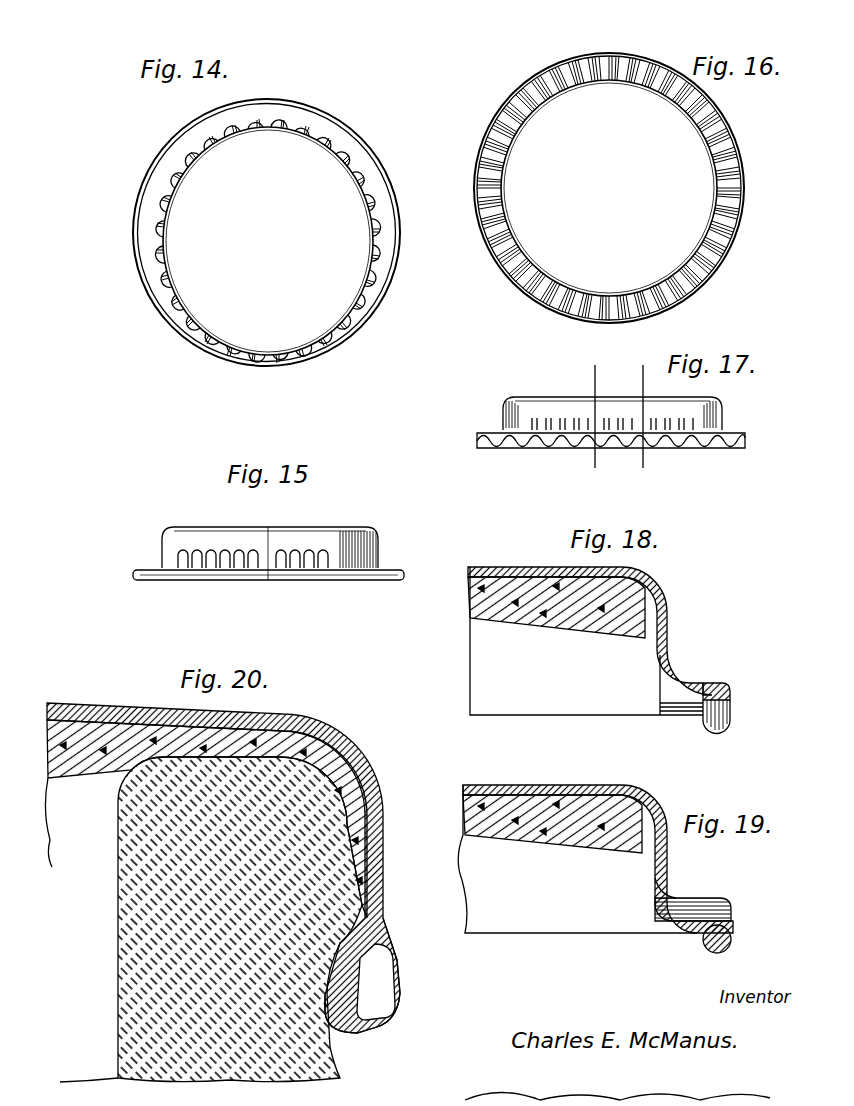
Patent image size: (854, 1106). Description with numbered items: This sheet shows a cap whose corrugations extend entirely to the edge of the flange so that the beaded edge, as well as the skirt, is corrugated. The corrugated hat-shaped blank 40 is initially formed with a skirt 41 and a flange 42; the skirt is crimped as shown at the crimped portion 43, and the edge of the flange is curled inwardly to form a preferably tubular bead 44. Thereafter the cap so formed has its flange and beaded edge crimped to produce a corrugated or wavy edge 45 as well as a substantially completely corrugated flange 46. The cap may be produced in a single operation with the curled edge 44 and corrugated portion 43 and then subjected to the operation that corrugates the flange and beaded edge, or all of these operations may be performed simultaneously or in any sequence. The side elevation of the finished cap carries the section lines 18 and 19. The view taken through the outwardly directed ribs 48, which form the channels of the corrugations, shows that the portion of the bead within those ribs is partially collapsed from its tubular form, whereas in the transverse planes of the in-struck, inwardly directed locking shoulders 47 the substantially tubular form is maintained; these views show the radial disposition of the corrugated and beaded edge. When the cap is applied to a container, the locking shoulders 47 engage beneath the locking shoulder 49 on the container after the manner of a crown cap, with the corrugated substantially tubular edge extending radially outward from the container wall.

In FIG. 14, the blank 40 is at (268, 241).
In FIG. 15, the skirt 41 is at (376, 548).
In FIG. 18, the skirt 41 is at (667, 628).
In FIG. 14, the flange 42 is at (193, 323).
In FIG. 14, the crimped portion of skirt 43 is at (168, 278).
In FIG. 15, the tubular bead 44 is at (137, 571).
In FIG. 18, the tubular bead 44 is at (710, 685).
In FIG. 19, the tubular bead 44 is at (733, 942).
In FIG. 20, the tubular bead 44 is at (357, 1027).
In FIG. 16, the corrugated or wavy edge 45 is at (743, 205).
In FIG. 17, the corrugated or wavy edge 45 is at (745, 436).
In FIG. 16, the corrugated flange 46 is at (693, 275).
In FIG. 17, the corrugated flange 46 is at (488, 433).
In FIG. 19, the inwardly directed locking shoulders 47 is at (661, 934).
In FIG. 20, the inwardly directed locking shoulders 47 is at (347, 958).
In FIG. 18, the outwardly directed ribs 48 is at (658, 670).
In FIG. 19, the outwardly directed ribs 48 is at (680, 898).
In FIG. 20, the locking shoulder on container 49 is at (340, 933).
In FIG. 17, the section line 18— 18 is at (640, 418).
In FIG. 17, the section line 19— 19 is at (592, 418).